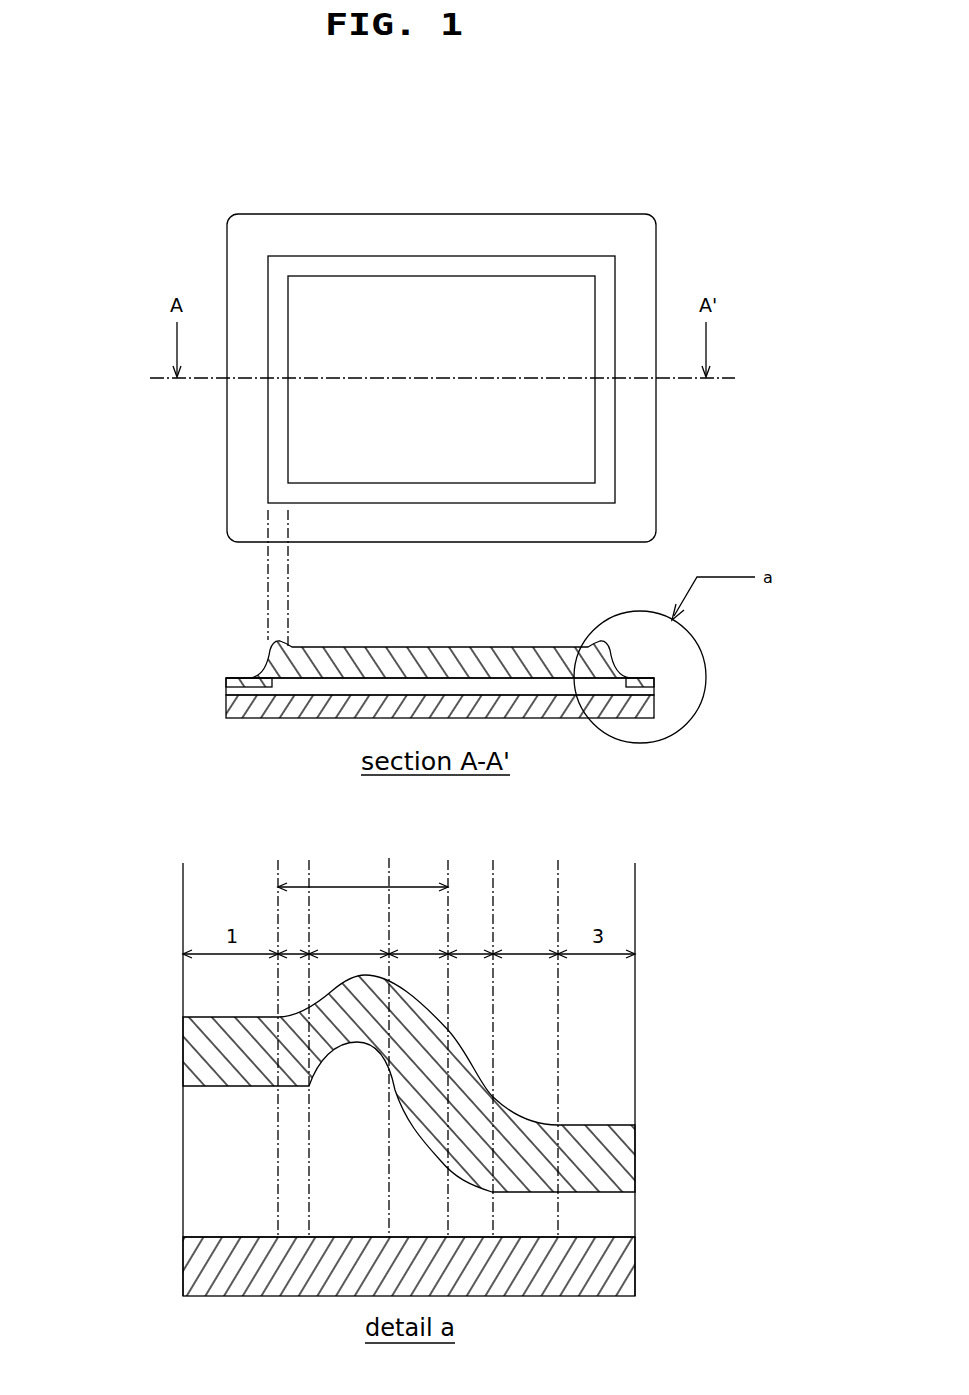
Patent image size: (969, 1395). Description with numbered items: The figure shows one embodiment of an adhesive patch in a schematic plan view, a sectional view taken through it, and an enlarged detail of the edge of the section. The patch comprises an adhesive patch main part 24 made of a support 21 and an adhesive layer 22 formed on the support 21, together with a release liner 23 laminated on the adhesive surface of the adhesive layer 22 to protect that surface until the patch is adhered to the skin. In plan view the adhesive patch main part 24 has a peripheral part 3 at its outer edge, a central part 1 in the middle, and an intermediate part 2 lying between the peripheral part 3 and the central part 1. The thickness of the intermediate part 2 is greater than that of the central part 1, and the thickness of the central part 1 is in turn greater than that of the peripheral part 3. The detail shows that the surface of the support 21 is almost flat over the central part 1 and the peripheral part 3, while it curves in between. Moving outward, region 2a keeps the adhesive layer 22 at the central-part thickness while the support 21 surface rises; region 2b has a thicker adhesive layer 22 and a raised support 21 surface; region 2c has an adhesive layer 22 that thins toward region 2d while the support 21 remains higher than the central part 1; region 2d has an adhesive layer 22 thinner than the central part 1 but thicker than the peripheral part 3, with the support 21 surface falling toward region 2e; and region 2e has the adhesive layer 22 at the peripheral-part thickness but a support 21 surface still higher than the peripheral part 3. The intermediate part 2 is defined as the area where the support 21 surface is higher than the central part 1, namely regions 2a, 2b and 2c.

The central part 1 is at (583, 312).
The intermediate part 2 is at (608, 270).
The peripheral part 3 is at (612, 227).
The support 21 is at (225, 688).
The adhesive layer 22 is at (225, 693).
The release liner 23 is at (225, 708).
The adhesive patch main part 24 is at (130, 640).
The region 2a is at (294, 939).
The region 2b is at (349, 939).
The region 2c is at (418, 939).
The region 2d is at (470, 939).
The region 2e is at (525, 939).